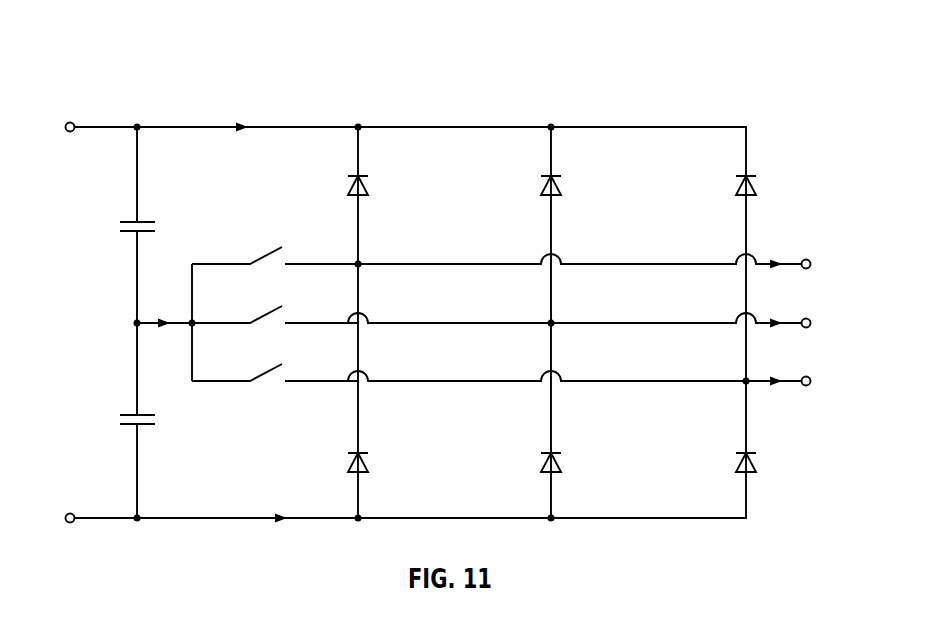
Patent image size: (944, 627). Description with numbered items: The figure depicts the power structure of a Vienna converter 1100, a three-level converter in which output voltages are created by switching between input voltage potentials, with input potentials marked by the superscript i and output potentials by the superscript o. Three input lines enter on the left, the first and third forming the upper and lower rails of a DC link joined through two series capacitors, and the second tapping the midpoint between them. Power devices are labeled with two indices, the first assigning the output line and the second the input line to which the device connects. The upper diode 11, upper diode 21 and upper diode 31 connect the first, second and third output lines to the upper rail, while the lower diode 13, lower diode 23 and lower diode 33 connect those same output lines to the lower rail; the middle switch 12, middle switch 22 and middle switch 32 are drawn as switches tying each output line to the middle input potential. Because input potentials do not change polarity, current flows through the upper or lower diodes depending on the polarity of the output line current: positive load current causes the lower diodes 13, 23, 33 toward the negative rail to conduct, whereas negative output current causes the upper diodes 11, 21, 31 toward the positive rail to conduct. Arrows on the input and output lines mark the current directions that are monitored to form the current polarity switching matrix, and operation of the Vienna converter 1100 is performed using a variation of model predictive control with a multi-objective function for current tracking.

The Vienna converter 1100 is at (119, 42).
The power device S11 11 is at (336, 187).
The power device S12 12 is at (275, 246).
The power device S13 13 is at (336, 463).
The power device S21 21 is at (528, 187).
The power device S22 22 is at (275, 306).
The power device S23 23 is at (528, 463).
The power device S31 31 is at (724, 187).
The power device S32 32 is at (275, 364).
The power device S33 33 is at (724, 463).